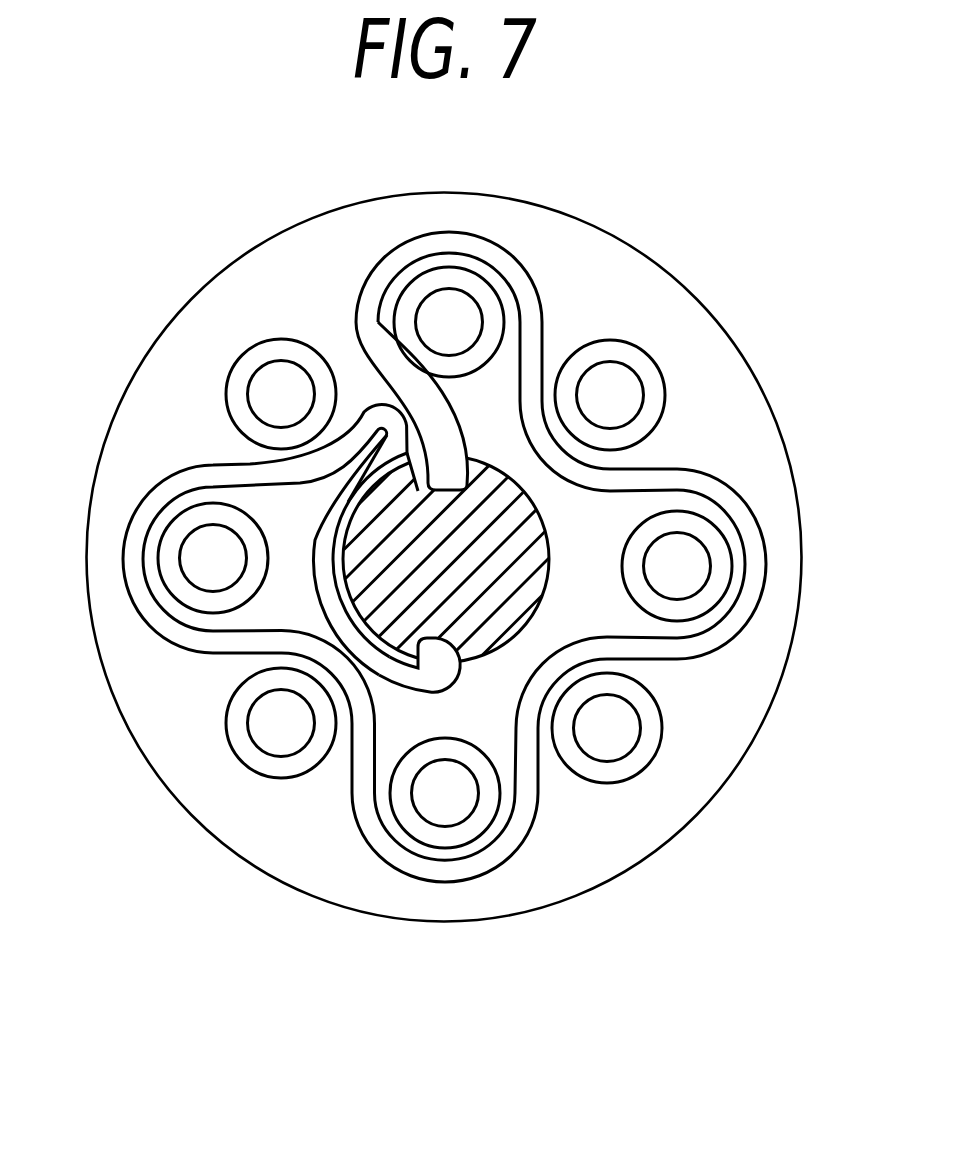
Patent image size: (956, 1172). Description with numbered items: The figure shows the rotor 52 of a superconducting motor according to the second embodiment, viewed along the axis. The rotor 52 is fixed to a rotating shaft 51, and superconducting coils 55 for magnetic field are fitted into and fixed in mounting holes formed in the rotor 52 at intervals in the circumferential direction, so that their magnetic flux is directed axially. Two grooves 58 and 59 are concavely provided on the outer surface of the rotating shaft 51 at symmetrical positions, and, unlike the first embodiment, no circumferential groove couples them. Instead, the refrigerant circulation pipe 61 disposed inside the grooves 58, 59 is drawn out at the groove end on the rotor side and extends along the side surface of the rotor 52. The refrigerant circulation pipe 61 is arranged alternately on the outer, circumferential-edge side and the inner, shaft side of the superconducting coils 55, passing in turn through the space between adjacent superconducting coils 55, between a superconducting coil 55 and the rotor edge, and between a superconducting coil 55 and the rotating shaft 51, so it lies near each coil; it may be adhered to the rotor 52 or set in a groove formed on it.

The rotating shaft 51 is at (407, 588).
The rotor 52 is at (618, 283).
The superconducting coils for magnetic field 55 is at (650, 747).
The groove 58 is at (422, 465).
The groove 59 is at (468, 640).
The refrigerant circulation pipe 61 is at (378, 836).